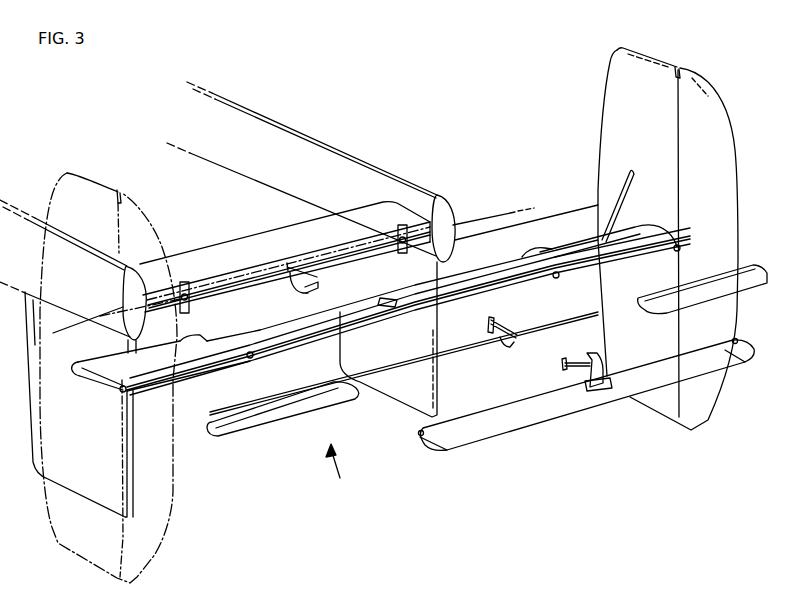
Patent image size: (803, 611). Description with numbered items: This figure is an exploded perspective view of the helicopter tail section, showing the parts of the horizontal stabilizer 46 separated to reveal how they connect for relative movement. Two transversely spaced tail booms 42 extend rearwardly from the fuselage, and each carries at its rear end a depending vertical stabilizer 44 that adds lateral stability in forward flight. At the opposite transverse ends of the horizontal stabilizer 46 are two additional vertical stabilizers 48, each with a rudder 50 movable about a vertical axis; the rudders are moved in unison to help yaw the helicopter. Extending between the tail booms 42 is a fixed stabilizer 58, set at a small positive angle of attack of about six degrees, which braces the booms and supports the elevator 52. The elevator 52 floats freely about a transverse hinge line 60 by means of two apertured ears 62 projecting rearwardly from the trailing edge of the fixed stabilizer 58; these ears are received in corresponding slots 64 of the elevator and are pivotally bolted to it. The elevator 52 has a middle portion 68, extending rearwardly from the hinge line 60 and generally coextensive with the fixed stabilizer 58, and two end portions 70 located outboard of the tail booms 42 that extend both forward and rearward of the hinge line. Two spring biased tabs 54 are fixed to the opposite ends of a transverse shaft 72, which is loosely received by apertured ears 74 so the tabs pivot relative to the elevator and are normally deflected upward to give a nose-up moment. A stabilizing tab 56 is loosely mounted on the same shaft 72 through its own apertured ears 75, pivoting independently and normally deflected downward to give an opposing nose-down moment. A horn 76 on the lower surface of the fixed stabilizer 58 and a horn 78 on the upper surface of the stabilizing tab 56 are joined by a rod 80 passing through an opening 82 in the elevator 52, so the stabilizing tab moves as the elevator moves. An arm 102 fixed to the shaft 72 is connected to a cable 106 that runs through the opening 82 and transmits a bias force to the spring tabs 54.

The tail boom 42 is at (299, 129).
The vertical stabilizer 44 is at (438, 386).
The horizontal stabilizer 46 is at (343, 473).
The vertical stabilizer 48 is at (88, 560).
The rudder 50 is at (137, 577).
The elevator 52 is at (562, 244).
The spring biased tab 54 is at (752, 292).
The stabilizing tab 56 is at (476, 443).
The fixed stabilizer 58 is at (250, 240).
The hinge line 60 is at (506, 216).
The apertured ear 62 is at (189, 306).
The slot 64 is at (496, 267).
The middle portion 68 is at (471, 281).
The end portion 70 is at (645, 230).
The transverse shaft 72 is at (582, 321).
The apertured ear 74 is at (684, 247).
The apertured ear 75 is at (727, 338).
The horn 76 is at (292, 290).
The horn 78 is at (607, 375).
The rod 80 is at (310, 297).
The opening 82 is at (383, 297).
The arm 102 is at (508, 346).
The cable 106 is at (295, 265).